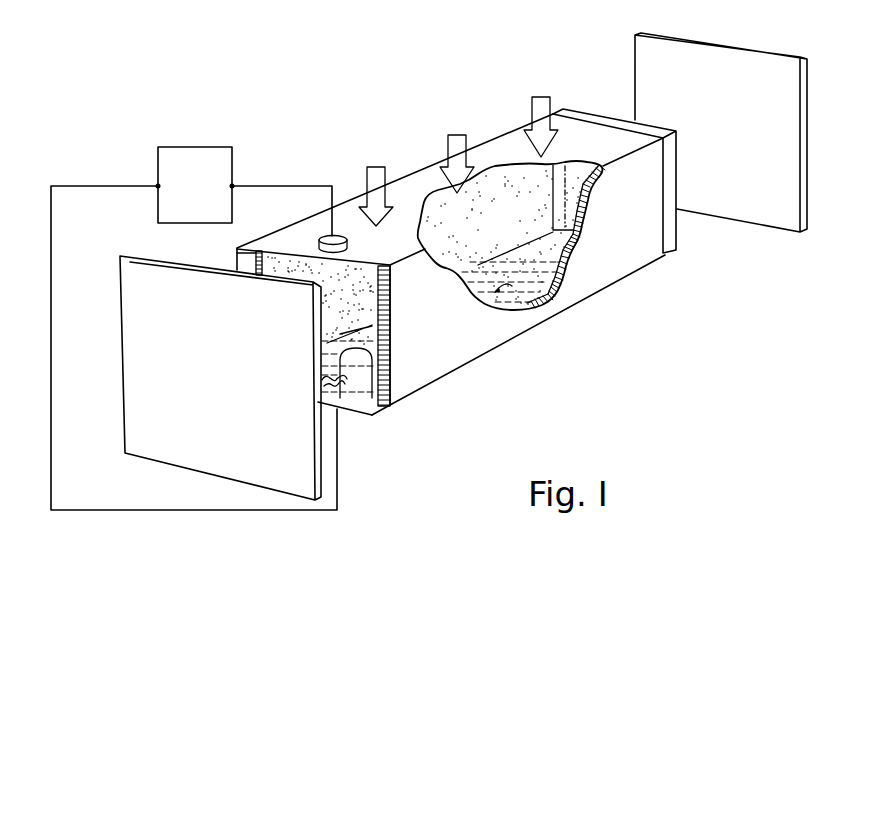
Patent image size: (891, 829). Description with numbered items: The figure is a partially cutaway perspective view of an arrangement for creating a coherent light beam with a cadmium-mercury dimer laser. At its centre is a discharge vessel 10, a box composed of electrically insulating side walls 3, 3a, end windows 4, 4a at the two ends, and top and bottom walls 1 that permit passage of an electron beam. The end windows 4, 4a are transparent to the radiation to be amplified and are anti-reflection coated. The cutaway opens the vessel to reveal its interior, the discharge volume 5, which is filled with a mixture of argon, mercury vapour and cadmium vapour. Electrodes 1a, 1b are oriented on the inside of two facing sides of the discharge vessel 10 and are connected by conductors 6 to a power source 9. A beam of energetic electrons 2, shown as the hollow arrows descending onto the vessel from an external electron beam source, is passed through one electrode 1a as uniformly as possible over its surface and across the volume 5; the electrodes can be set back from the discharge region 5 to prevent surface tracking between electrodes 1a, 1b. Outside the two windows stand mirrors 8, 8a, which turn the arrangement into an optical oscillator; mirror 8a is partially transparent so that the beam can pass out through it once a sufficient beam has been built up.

The top and bottom walls 1 is at (530, 307).
The electrode 1a is at (300, 252).
The electrode 1b is at (362, 418).
The beam of energetic electrons 2 is at (528, 99).
The side wall 3 is at (417, 355).
The side wall 3a is at (237, 253).
The end window 4 is at (361, 412).
The end window 4a is at (673, 228).
The discharge volume 5 is at (508, 242).
The conductors 6 is at (296, 184).
The mirror 8 is at (143, 303).
The mirror 8a is at (813, 101).
The power source 9 is at (195, 185).
The discharge vessel 10 is at (353, 195).